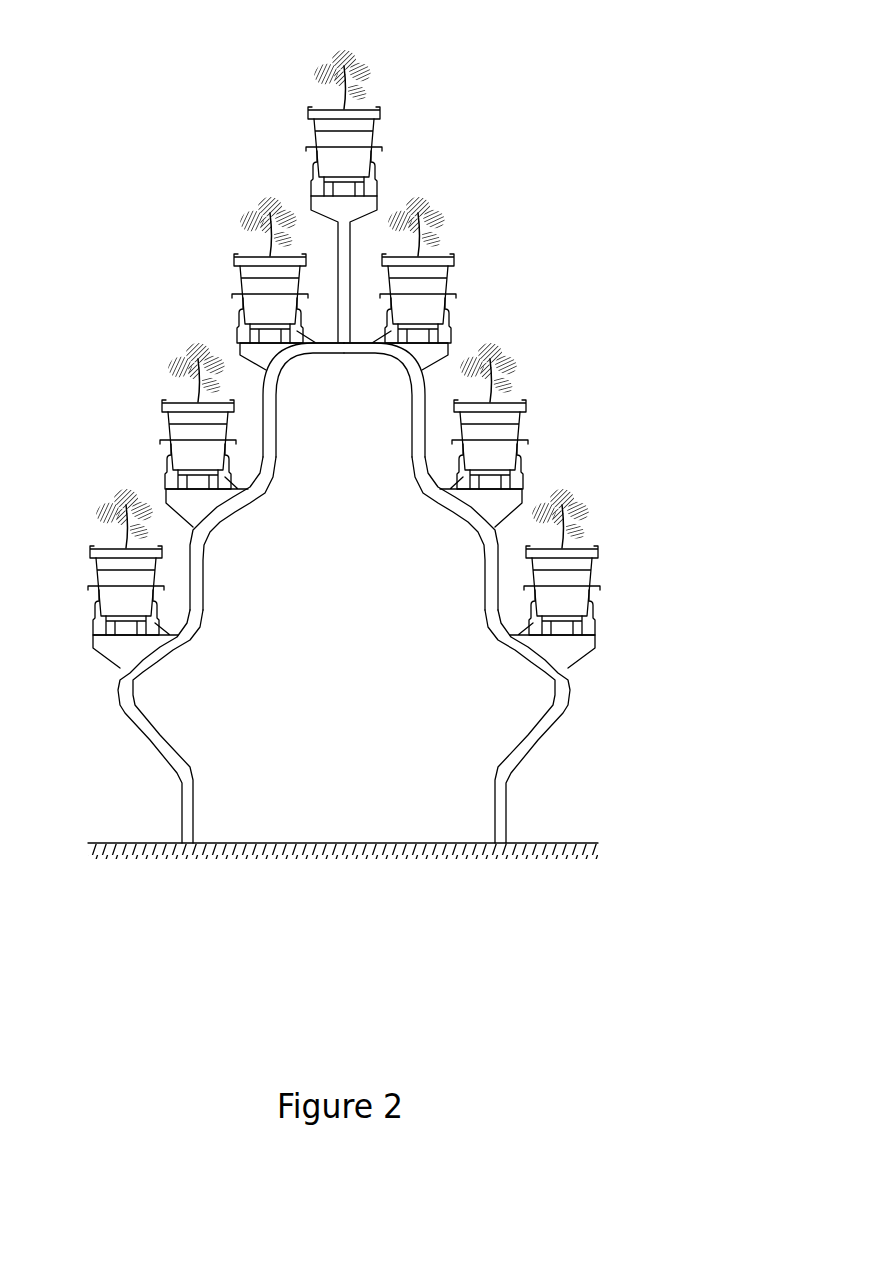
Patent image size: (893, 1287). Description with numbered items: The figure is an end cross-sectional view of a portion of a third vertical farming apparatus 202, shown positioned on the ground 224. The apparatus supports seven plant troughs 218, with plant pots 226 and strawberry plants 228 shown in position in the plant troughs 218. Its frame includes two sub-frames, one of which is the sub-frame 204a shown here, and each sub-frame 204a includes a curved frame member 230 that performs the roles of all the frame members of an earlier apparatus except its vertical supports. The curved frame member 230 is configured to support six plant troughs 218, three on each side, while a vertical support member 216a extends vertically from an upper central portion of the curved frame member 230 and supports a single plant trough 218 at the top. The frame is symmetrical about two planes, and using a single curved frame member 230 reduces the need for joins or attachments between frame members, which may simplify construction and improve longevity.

The third vertical farming apparatus 202 is at (145, 80).
The sub-frame 204a is at (610, 710).
The vertical support member 216a is at (348, 268).
The plant trough 218 is at (257, 313).
The ground 224 is at (555, 843).
The plant pot 226 is at (185, 415).
The strawberry plant 228 is at (173, 368).
The curved frame member 230 is at (142, 722).